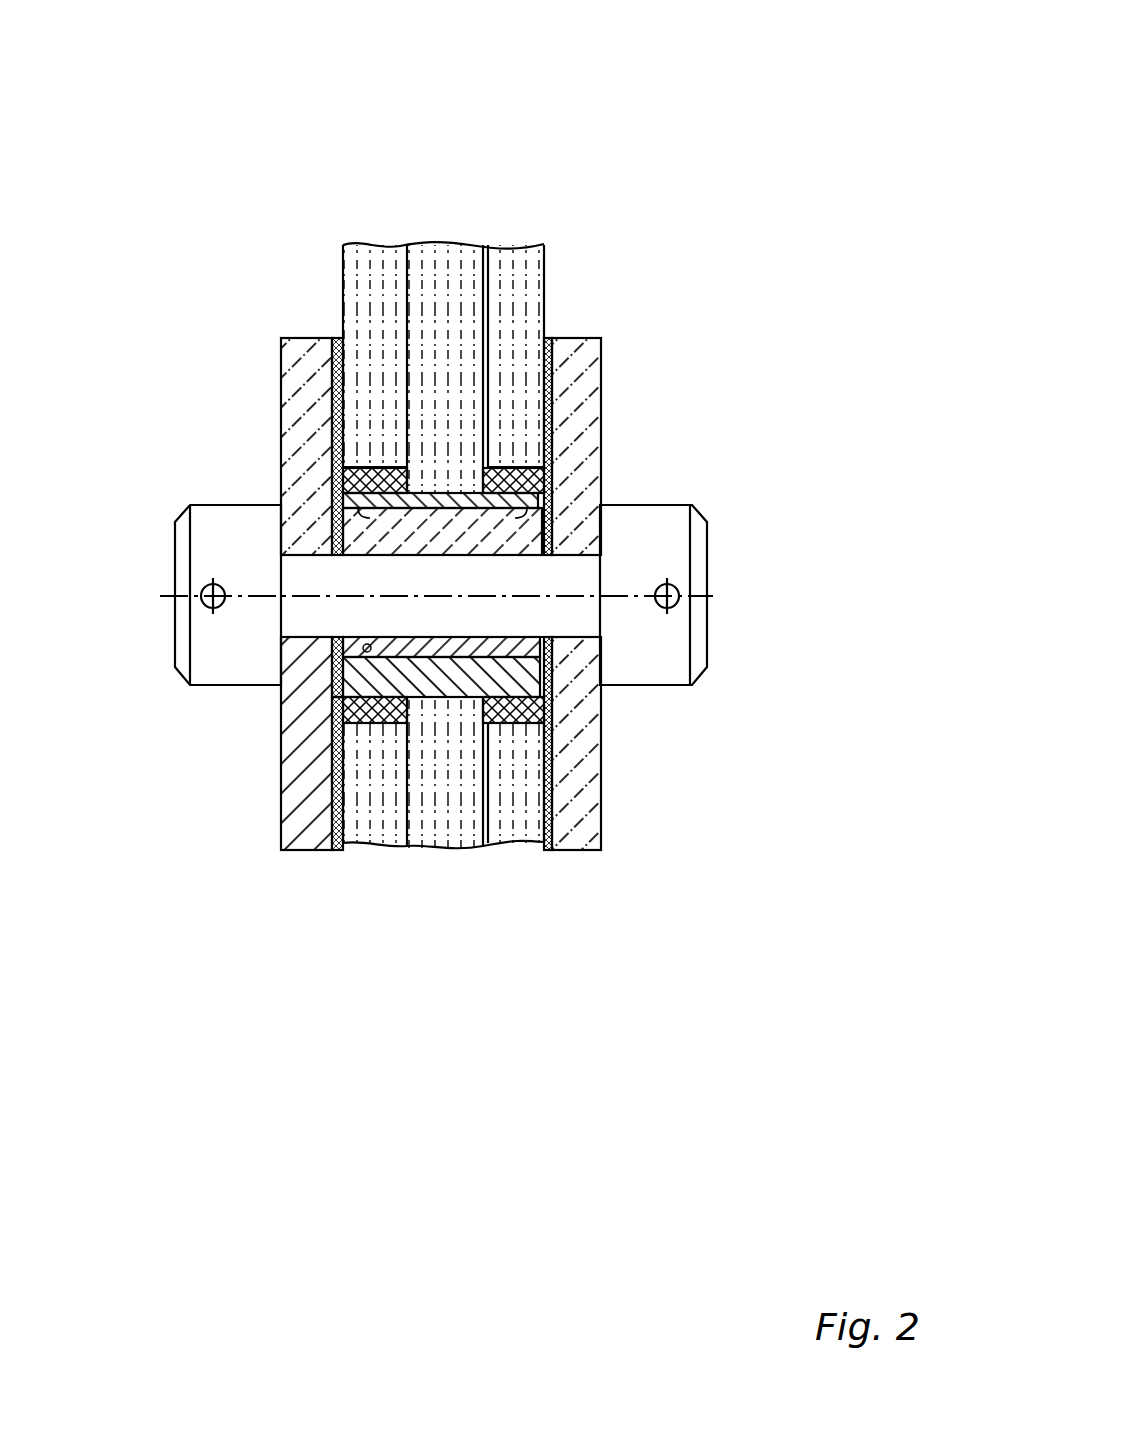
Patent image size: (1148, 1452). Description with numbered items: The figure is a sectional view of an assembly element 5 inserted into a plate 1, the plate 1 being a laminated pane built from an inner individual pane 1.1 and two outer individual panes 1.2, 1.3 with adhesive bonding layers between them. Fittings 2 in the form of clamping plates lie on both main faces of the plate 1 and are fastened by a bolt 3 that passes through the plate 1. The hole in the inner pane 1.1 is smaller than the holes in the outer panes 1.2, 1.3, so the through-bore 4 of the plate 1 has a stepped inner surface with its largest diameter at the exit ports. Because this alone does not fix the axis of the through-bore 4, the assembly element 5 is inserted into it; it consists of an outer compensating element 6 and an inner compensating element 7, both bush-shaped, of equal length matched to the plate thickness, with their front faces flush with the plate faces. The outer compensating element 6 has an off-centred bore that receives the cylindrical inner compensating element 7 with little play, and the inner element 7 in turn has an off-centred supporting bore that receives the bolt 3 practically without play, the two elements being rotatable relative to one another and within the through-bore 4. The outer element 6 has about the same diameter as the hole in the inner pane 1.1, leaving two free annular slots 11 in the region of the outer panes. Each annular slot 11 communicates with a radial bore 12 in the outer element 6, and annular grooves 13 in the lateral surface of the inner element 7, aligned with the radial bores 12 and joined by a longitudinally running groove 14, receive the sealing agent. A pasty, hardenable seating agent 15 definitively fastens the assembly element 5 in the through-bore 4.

The plate 1 is at (669, 74).
The inner individual pane 1.1 is at (399, 315).
The outer individual pane 1.2 is at (496, 830).
The outer individual pane 1.3 is at (421, 841).
The fitting 2 is at (492, 620).
The bolt 3 is at (436, 595).
The through-bore 4 is at (369, 358).
The assembly element 5 is at (356, 446).
The outer compensating element 6 is at (258, 773).
The inner compensating element 7 is at (346, 743).
The annular slot 11 is at (478, 526).
The radial bore 12 is at (445, 553).
The annular groove 13 is at (433, 602).
The longitudinally running groove 14 is at (442, 567).
The seating agent 15 is at (538, 786).